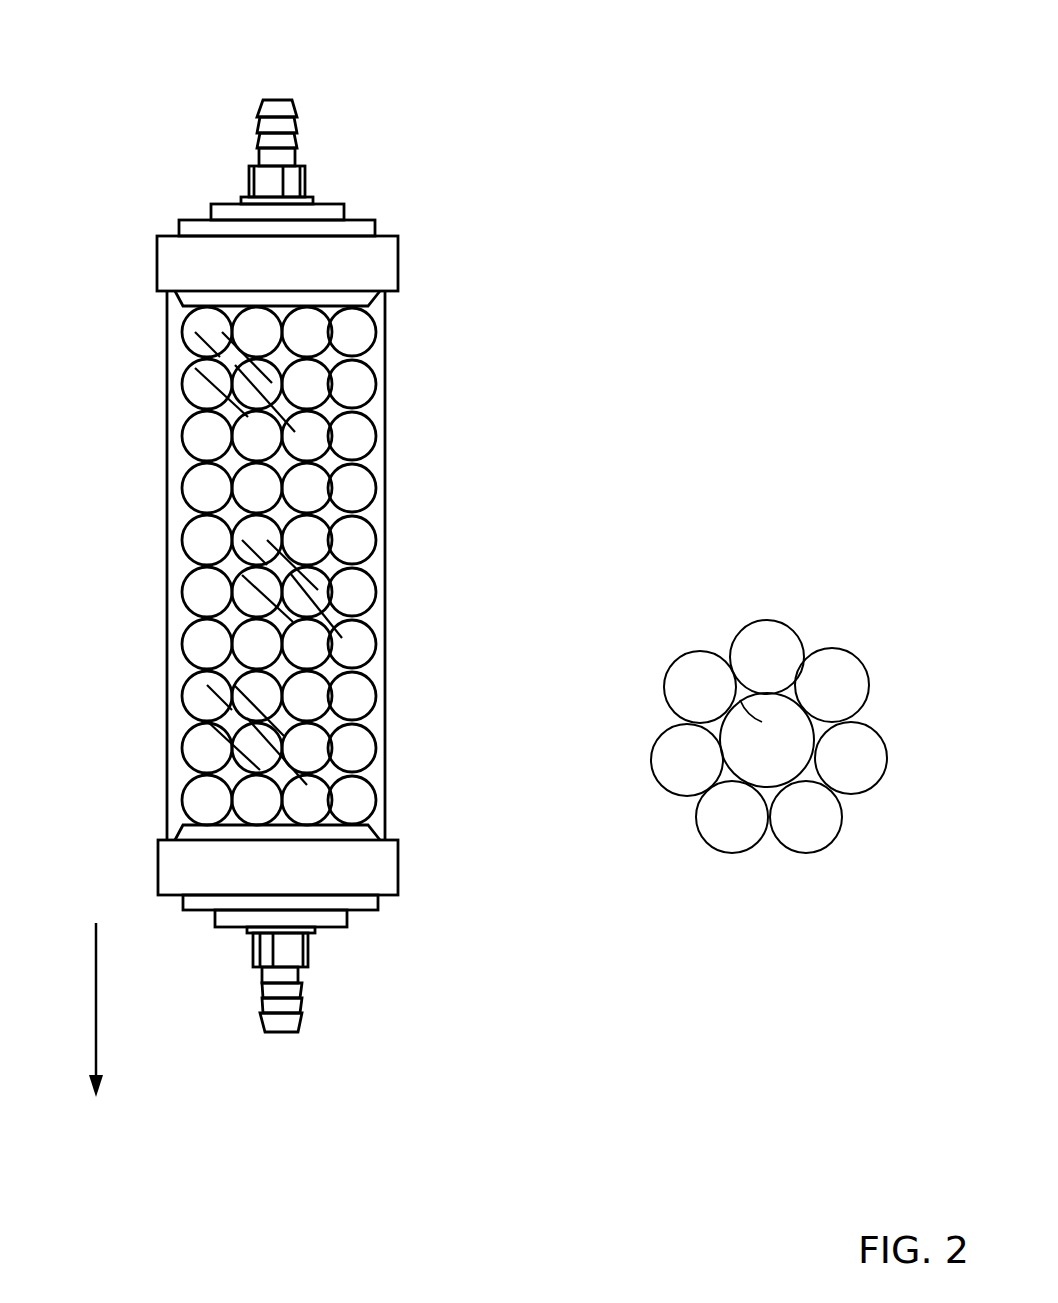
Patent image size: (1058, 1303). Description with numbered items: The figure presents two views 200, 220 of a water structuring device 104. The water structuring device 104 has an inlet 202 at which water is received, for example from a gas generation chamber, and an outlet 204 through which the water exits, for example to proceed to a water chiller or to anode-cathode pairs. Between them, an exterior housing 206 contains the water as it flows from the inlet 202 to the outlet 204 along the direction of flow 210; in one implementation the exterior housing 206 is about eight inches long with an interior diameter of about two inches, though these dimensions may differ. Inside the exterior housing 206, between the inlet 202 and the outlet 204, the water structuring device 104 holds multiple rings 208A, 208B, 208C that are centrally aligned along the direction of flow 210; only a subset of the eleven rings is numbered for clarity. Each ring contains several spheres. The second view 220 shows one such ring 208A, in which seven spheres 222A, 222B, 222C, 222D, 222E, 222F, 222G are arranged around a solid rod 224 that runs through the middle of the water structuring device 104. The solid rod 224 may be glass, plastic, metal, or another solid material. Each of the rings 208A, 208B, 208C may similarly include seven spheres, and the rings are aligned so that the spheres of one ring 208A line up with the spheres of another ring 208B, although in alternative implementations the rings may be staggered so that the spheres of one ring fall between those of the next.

The view 200 is at (200, 68).
The inlet 202 is at (277, 100).
The outlet 204 is at (283, 1032).
The exterior housing 206 is at (372, 722).
The ring 208A is at (348, 333).
The ring 208B is at (348, 383).
The ring 208C is at (348, 435).
The direction of flow 210 is at (96, 973).
The water structuring device 104 is at (137, 480).
The view 220 is at (622, 570).
The sphere 222A is at (787, 630).
The sphere 222B is at (863, 665).
The sphere 222C is at (887, 757).
The sphere 222D is at (840, 832).
The sphere 222E is at (733, 853).
The sphere 222F is at (650, 768).
The sphere 222G is at (665, 672).
The solid rod 224 is at (758, 712).